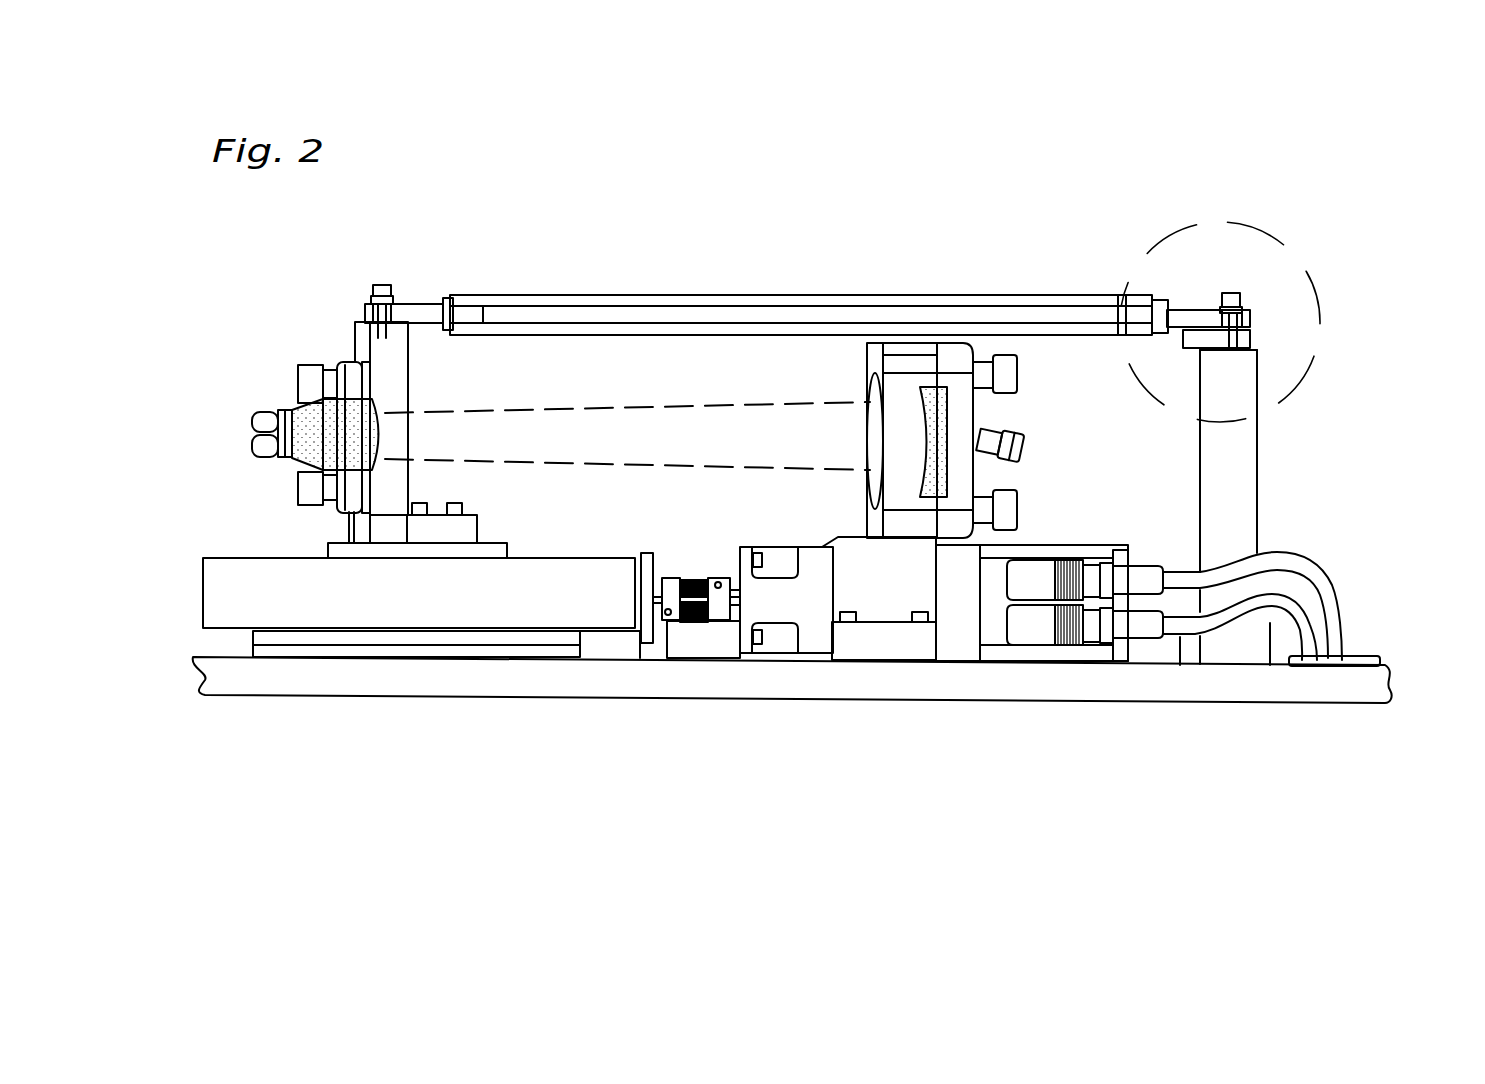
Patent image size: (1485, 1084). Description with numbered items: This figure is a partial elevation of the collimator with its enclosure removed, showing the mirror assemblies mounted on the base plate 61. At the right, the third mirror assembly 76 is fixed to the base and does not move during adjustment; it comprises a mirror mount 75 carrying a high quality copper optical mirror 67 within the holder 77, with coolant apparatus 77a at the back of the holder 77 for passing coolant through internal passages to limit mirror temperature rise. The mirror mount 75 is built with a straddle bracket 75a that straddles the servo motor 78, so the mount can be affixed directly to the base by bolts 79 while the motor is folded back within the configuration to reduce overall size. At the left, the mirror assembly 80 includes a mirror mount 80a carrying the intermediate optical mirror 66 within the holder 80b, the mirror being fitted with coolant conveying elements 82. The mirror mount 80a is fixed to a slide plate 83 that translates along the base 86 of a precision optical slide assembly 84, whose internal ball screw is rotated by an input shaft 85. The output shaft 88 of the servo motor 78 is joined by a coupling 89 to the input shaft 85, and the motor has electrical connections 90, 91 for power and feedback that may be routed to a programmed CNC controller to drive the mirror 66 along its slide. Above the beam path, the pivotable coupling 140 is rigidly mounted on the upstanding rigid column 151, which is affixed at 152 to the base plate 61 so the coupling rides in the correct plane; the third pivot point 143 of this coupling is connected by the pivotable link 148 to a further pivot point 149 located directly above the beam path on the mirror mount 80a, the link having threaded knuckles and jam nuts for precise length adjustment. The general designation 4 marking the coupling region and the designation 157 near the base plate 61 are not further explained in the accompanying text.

The optical head assembly 4 is at (1180, 228).
The base plate 61 is at (1268, 687).
The optical mirror 66 is at (335, 437).
The optical mirror 67 is at (925, 420).
The mirror mount 75 is at (908, 487).
The straddle bracket 75a is at (862, 585).
The third mirror assembly 76 is at (835, 443).
The mirror holder 77 is at (960, 398).
The coolant apparatus 77a is at (1000, 434).
The servo motor 78 is at (778, 587).
The bolts 79 is at (930, 615).
The mirror assembly 80 is at (448, 370).
The mirror mount 80a is at (385, 523).
The mirror holder 80b is at (356, 363).
The coolant conveying elements 82 is at (272, 450).
The slide plate 83 is at (413, 552).
The slide assembly 84 is at (192, 591).
The input shaft 85 is at (652, 663).
The base 86 is at (510, 605).
The output shaft 88 is at (728, 623).
The coupling 89 is at (690, 585).
The electrical connection 90 is at (1143, 630).
The electrical connection 91 is at (1147, 584).
The pivotable coupling 140 is at (1247, 340).
The third pivot point 143 is at (1247, 312).
The pivotable link 148 is at (855, 312).
The pivot point 149 is at (382, 309).
The upstanding rigid column 151 is at (1235, 518).
The column attachment 152 is at (1285, 612).
The cable clamp 157 is at (1257, 642).